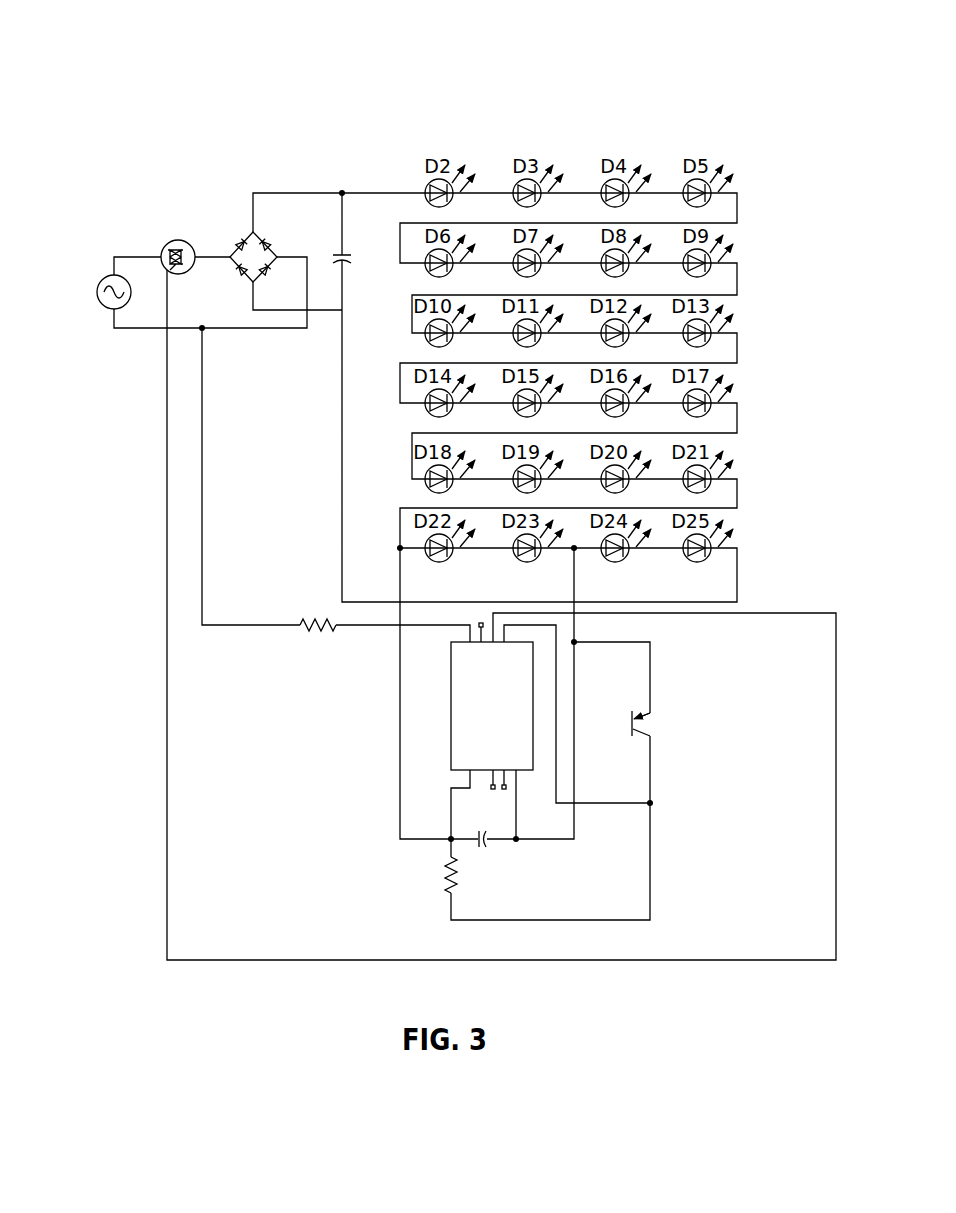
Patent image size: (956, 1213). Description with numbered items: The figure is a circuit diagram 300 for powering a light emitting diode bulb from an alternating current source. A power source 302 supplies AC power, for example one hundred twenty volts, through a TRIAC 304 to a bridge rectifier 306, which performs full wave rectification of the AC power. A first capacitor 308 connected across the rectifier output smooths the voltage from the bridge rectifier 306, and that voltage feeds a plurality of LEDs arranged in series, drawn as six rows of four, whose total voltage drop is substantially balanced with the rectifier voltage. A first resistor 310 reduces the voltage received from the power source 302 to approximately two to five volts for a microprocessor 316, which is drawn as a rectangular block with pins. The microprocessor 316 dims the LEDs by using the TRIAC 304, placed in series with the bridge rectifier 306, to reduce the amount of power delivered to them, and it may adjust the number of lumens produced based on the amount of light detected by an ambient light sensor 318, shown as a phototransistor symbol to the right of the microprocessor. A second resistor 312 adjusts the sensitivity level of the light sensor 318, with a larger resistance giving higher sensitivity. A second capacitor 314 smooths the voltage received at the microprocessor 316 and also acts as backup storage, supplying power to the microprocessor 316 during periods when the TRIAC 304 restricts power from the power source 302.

The circuit diagram 300 is at (748, 117).
The power source 302 is at (85, 265).
The TRIAC 304 is at (176, 230).
The bridge rectifier 306 is at (272, 244).
The first capacitor 308 is at (360, 259).
The first resistor 310 is at (318, 652).
The second resistor 312 is at (431, 878).
The second capacitor 314 is at (486, 868).
The microprocessor 316 is at (488, 706).
The ambient light sensor 318 is at (703, 726).